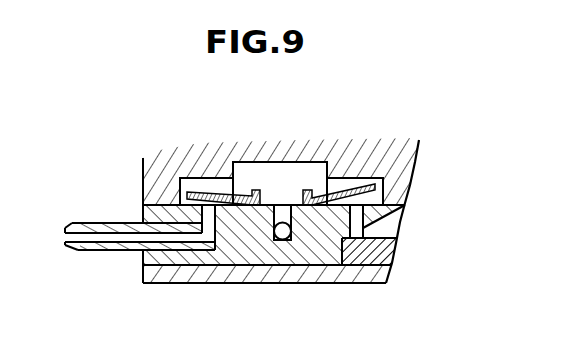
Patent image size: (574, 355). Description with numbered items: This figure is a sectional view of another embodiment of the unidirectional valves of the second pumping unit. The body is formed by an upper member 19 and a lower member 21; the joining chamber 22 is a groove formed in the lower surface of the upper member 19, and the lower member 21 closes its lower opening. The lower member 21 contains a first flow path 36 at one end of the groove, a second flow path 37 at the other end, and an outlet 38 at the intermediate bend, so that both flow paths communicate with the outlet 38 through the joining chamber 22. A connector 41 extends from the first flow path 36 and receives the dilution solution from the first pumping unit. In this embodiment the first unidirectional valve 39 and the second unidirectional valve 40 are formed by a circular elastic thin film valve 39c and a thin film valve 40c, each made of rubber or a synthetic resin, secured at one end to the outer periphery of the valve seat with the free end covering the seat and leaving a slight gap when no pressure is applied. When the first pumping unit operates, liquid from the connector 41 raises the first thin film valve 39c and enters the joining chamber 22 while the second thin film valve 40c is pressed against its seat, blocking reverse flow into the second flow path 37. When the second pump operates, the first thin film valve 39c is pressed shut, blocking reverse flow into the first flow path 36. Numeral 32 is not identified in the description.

The upper member 19 is at (143, 182).
The lower member 21 is at (236, 258).
The joining chamber 22 is at (282, 178).
The bottom plate 32 is at (317, 266).
The first flow path 36 is at (209, 240).
The second flow path 37 is at (355, 232).
The outlet 38 is at (280, 240).
The first unidirectional valve 39 is at (220, 141).
The first thin film valve 39c is at (212, 192).
The second unidirectional valve 40 is at (354, 141).
The second thin film valve 40c is at (362, 188).
The connector 41 is at (95, 251).